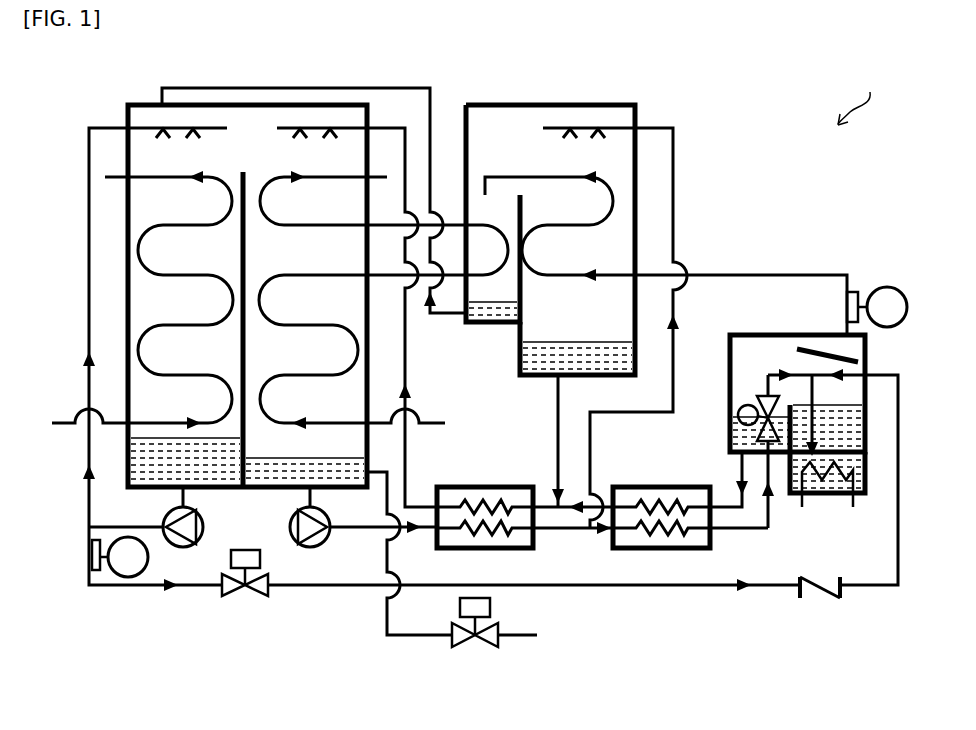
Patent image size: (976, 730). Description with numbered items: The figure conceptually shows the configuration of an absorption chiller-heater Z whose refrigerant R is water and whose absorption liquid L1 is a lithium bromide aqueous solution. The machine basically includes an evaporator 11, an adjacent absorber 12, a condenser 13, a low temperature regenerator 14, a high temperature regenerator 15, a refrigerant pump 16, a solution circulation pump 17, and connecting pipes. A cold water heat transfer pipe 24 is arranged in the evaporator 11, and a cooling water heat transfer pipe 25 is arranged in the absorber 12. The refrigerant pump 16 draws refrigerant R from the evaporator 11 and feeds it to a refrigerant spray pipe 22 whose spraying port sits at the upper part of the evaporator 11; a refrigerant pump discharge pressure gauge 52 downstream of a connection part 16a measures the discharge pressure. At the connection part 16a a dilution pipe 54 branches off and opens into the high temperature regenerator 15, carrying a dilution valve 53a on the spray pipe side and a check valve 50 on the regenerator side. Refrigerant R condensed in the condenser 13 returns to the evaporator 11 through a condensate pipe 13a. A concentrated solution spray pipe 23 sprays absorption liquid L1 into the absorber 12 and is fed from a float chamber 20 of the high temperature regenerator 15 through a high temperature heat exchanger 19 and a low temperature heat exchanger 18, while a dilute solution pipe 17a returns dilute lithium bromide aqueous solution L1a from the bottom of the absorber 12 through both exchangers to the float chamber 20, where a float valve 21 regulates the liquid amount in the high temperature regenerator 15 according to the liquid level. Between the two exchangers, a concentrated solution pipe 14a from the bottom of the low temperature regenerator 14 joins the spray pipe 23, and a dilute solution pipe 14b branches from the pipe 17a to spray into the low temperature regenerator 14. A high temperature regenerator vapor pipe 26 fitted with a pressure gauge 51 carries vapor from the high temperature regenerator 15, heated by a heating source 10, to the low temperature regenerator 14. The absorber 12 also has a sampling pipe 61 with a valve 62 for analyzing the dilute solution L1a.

The heating source 10 is at (848, 476).
The evaporator 11 is at (148, 396).
The absorber 12 is at (343, 391).
The condenser 13 is at (489, 290).
The condensate pipe 13a is at (286, 90).
The low temperature regenerator 14 is at (614, 306).
The concentrated solution pipe 14a is at (558, 398).
The dilute solution pipe 14b is at (674, 178).
The high temperature regenerator 15 is at (868, 356).
The refrigerant pump 16 is at (200, 512).
The connection part 16a is at (89, 527).
The solution circulation pump 17 is at (298, 511).
The dilute solution pipe 17a is at (340, 530).
The low temperature heat exchanger 18 is at (482, 487).
The high temperature heat exchanger 19 is at (646, 487).
The float chamber 20 is at (745, 334).
The float valve 21 is at (742, 408).
The refrigerant spray pipe 22 is at (112, 126).
The concentrated solution spray pipe 23 is at (383, 124).
The cold water heat transfer pipe 24 is at (64, 421).
The cooling water heat transfer pipe 25 is at (430, 420).
The high temperature regenerator vapor pipe 26 is at (745, 276).
The check valve 50 is at (822, 598).
The high temperature regenerator pressure gauge 51 is at (878, 289).
The refrigerant pump discharge pressure gauge 52 is at (148, 558).
The dilution valve 53a is at (261, 559).
The dilution pipe 54 is at (150, 588).
The sampling pipe 61 is at (424, 638).
The valve 62 is at (492, 606).
The refrigerant R is at (142, 456).
The absorption liquid L1 is at (596, 348).
The dilute lithium bromide aqueous solution L1a is at (360, 488).
The absorption chiller-heater Z is at (857, 98).